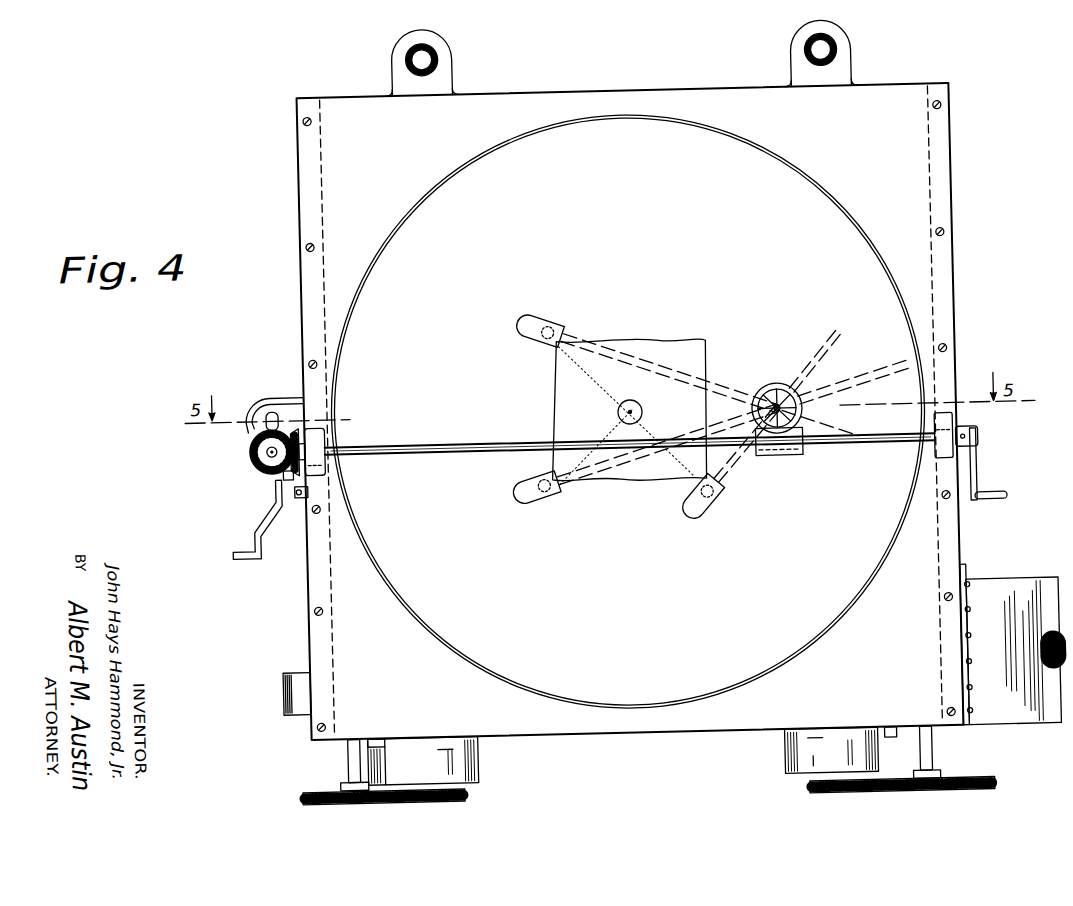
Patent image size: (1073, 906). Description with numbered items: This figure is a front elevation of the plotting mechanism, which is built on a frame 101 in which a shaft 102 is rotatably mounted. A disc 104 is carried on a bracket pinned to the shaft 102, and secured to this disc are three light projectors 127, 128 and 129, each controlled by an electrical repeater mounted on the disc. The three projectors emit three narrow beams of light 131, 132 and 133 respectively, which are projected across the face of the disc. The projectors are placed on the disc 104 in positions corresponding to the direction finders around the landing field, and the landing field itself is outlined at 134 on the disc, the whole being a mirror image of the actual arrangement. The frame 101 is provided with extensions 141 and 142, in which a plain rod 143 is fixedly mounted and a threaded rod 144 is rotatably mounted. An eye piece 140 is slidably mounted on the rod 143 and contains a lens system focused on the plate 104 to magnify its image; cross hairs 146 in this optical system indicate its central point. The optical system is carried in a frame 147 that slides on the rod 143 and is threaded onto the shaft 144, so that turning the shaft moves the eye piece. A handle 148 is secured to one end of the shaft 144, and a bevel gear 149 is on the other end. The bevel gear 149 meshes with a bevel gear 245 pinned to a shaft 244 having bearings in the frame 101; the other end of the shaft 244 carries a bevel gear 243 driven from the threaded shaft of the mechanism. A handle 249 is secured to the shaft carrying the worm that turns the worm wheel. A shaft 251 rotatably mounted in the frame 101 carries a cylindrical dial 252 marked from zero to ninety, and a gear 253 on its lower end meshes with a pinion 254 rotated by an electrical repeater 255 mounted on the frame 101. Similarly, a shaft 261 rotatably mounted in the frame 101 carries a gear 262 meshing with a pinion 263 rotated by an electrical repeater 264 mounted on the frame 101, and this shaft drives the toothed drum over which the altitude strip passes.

The frame 101 is at (644, 378).
The shaft 102 is at (573, 409).
The disc 104 is at (662, 411).
The light projector 127 is at (709, 505).
The light projector 128 is at (516, 489).
The light projector 129 is at (539, 314).
The beam of light 131 is at (777, 415).
The beam of light 132 is at (668, 465).
The beam of light 133 is at (710, 379).
The landing field outline 134 is at (657, 401).
The eye piece 140 is at (854, 381).
The extension 141 is at (347, 442).
The extension 142 is at (980, 433).
The plain rod 143 is at (629, 429).
The threaded rod 144 is at (630, 428).
The cross hairs 146 is at (776, 389).
The frame 147 is at (793, 451).
The handle 148 is at (988, 463).
The bevel gear 149 is at (249, 492).
The bevel gear 243 is at (270, 397).
The shaft 244 is at (247, 453).
The bevel gear 245 is at (242, 453).
The handle 249 is at (254, 520).
The shaft 251 is at (326, 761).
The cylindrical dial 252 is at (289, 680).
The gear 253 is at (320, 779).
The pinion 254 is at (419, 786).
The electrical repeater 255 is at (448, 760).
The shaft 261 is at (950, 747).
The gear 262 is at (964, 766).
The pinion 263 is at (865, 785).
The electrical repeater 264 is at (816, 751).